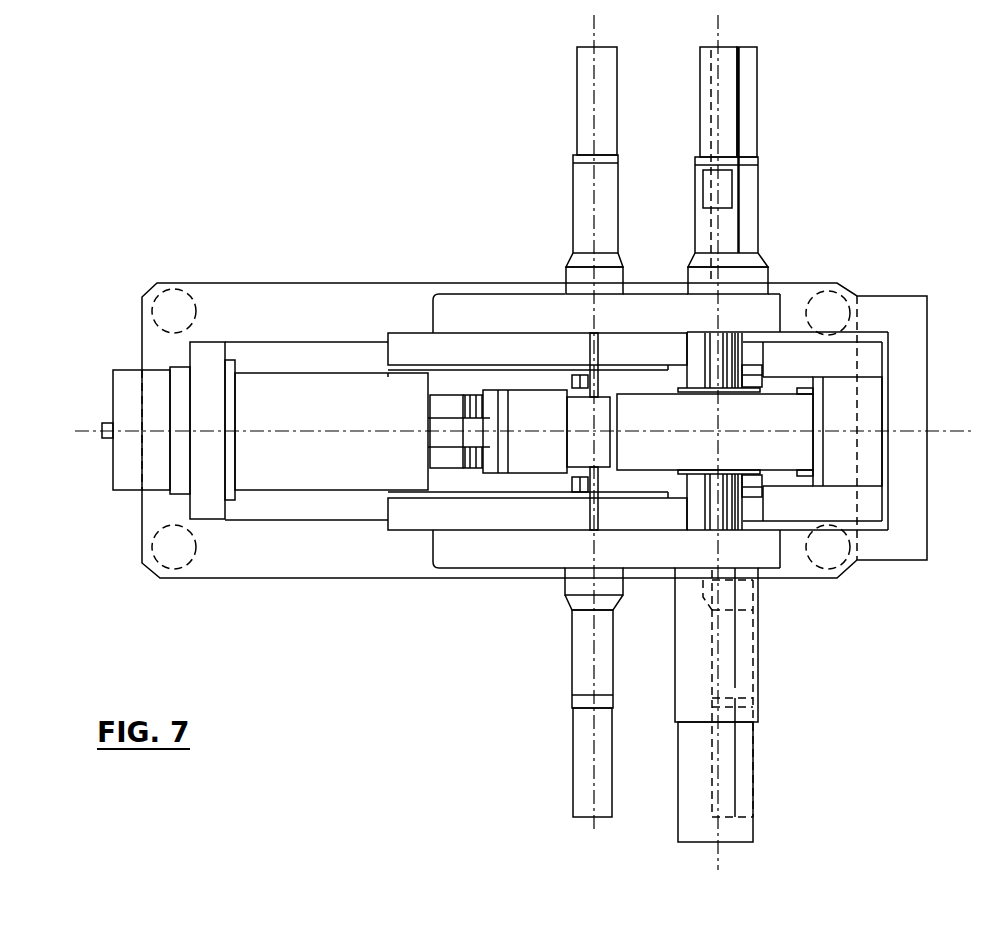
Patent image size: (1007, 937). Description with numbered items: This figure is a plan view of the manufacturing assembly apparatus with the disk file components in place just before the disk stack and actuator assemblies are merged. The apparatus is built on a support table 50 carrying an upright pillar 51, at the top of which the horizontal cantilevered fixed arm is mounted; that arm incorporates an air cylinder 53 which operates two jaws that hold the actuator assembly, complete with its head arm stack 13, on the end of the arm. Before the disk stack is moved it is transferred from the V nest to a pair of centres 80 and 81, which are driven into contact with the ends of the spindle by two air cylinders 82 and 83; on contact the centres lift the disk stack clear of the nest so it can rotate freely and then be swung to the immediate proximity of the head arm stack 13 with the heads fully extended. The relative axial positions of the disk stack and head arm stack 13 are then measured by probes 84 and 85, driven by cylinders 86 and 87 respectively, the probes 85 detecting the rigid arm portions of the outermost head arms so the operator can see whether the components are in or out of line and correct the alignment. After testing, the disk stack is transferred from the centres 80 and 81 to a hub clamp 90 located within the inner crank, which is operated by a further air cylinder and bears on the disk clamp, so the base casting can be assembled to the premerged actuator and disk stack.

The head arm stack 13 is at (603, 403).
The support table 50 is at (143, 530).
The upright pillar 51 is at (200, 472).
The air cylinder 53 is at (112, 402).
The centre 80 is at (710, 500).
The centre 81 is at (710, 347).
The air cylinder 82 is at (753, 833).
The air cylinder 83 is at (757, 88).
The probe 84 is at (752, 347).
The probe 85 is at (587, 350).
The cylinder 86 is at (712, 102).
The cylinder 87 is at (577, 93).
The hub clamp 90 is at (760, 380).